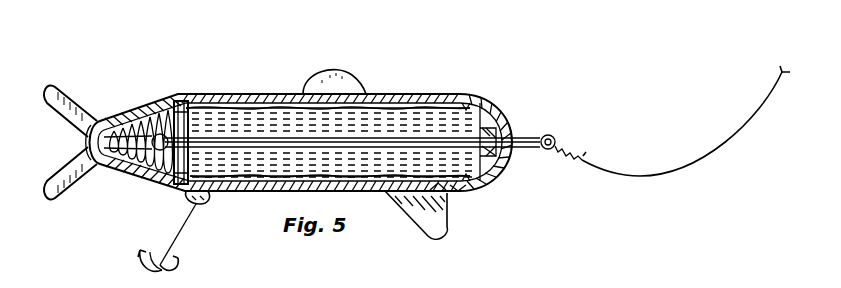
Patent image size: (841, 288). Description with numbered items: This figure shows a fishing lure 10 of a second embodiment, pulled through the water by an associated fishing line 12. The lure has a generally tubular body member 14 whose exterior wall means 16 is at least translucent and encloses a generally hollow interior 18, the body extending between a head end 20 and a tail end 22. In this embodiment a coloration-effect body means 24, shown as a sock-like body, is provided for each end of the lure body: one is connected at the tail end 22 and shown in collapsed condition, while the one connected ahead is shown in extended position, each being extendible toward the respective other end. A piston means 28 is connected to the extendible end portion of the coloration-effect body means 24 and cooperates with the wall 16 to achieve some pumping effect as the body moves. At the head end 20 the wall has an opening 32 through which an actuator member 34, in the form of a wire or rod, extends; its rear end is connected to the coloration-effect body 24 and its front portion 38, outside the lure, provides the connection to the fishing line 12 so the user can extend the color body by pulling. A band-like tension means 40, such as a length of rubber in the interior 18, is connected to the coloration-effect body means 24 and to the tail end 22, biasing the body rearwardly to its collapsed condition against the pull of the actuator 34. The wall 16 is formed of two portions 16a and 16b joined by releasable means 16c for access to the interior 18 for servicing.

The fishing lure 10 is at (470, 73).
The fishing line 12 is at (760, 113).
The body member 14 is at (407, 92).
The exterior wall means 16 is at (252, 106).
The wall portion 16a is at (458, 191).
The wall portion 16b is at (440, 196).
The releasable means 16c is at (442, 193).
The hollow interior 18 is at (265, 108).
The head end 20 is at (488, 103).
The tail end 22 is at (133, 104).
The coloration-effect body means 24 is at (148, 100).
The piston means 28 is at (184, 101).
The opening 32 is at (506, 140).
The actuator member 34 is at (556, 137).
The front portion of the actuator member 38 is at (548, 149).
The tension means 40 is at (141, 165).